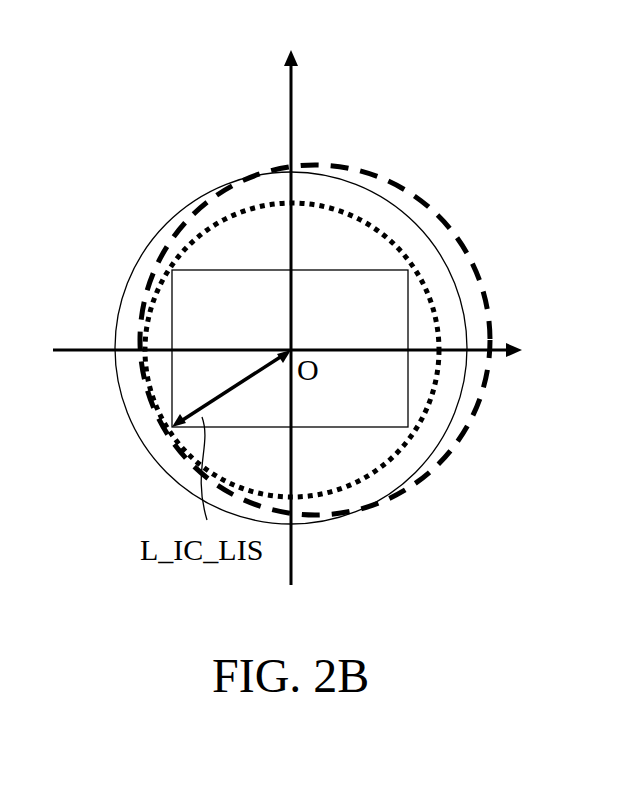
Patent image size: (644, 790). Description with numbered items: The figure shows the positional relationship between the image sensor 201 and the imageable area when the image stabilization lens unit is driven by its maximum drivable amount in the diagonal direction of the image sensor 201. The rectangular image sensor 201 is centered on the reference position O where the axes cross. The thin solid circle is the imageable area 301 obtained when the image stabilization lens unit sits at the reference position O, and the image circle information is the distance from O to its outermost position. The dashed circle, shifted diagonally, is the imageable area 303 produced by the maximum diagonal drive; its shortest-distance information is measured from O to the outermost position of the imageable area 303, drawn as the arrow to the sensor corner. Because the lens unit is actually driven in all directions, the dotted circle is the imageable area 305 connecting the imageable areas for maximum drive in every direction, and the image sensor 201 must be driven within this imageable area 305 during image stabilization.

The image sensor 201 is at (409, 268).
The imageable area 303 is at (485, 287).
The imageable area 301 is at (468, 347).
The imageable area based on actual driving 305 is at (430, 415).